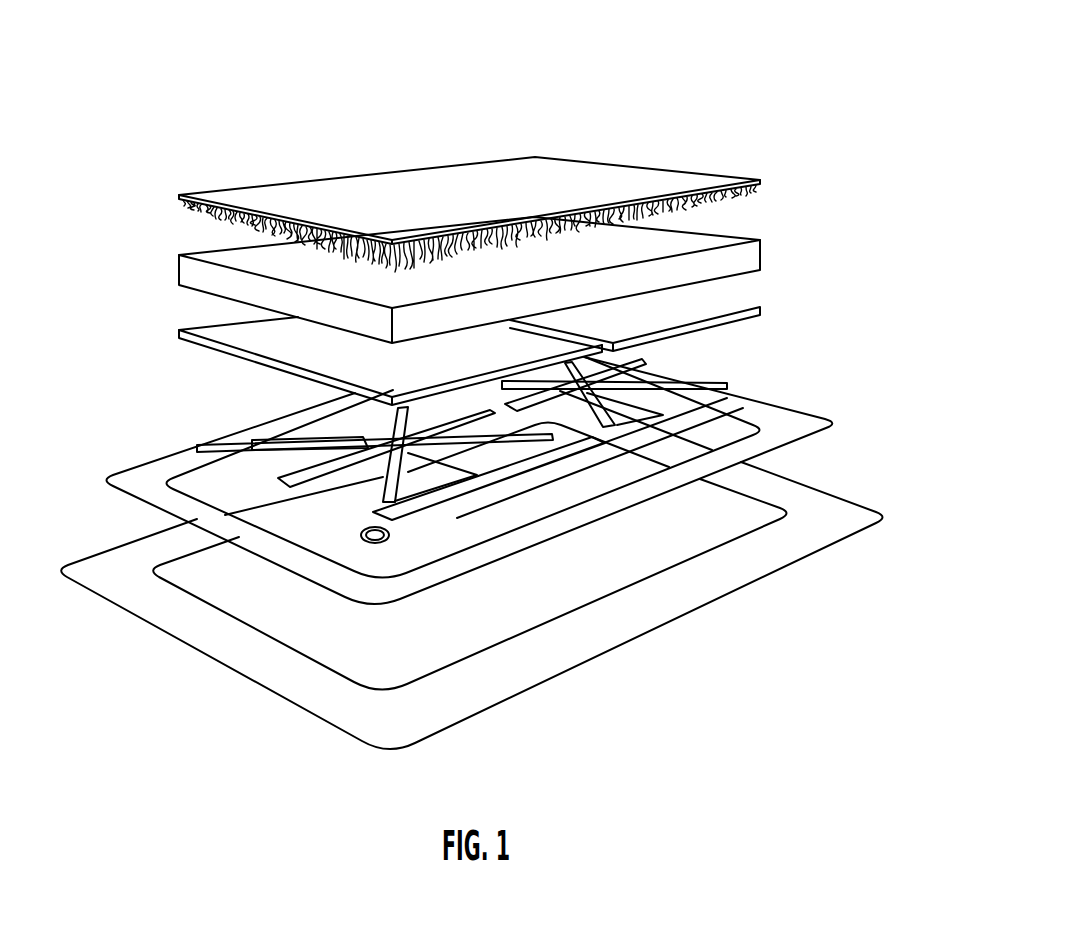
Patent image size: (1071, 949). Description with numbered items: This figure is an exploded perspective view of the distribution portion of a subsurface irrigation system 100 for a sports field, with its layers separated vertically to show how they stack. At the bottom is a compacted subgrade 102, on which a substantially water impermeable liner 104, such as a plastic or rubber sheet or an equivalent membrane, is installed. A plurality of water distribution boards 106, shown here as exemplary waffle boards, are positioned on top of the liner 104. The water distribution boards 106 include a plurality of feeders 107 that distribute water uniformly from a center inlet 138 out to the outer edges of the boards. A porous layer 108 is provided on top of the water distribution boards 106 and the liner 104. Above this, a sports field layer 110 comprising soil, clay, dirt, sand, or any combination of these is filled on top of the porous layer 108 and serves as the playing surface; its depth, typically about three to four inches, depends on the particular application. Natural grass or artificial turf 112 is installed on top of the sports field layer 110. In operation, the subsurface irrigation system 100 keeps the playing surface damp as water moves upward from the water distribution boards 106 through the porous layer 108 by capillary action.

The subsurface irrigation system 100 is at (697, 68).
The compacted subgrade 102 is at (658, 550).
The water impermeable liner 104 is at (655, 468).
The water distribution boards 106 is at (690, 381).
The feeders 107 is at (288, 445).
The porous layer 108 is at (665, 317).
The sports field layer 110 is at (657, 245).
The natural grass or artificial turf 112 is at (668, 182).
The center inlet 138 is at (360, 538).